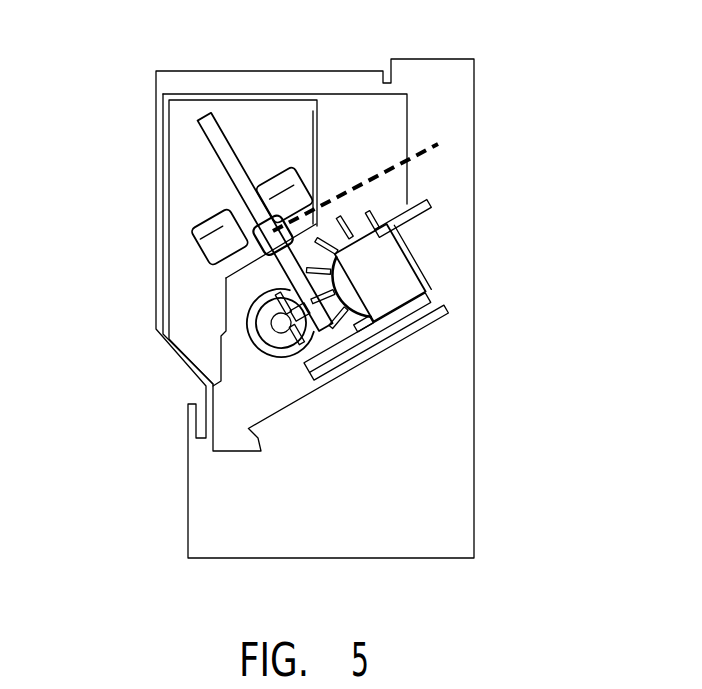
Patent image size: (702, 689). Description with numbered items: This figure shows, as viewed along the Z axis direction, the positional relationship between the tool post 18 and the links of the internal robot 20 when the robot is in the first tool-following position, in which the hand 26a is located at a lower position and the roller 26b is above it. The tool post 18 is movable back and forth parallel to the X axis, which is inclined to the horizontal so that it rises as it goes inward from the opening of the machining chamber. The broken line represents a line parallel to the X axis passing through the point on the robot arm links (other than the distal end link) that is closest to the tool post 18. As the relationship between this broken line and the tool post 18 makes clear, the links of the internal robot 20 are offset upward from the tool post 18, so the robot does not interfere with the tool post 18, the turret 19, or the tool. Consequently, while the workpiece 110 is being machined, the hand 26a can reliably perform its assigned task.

The internal robot 20 is at (268, 165).
The roller 26b is at (220, 147).
The hand 26a is at (232, 282).
The workpiece 110 is at (282, 335).
The tool post 18 is at (387, 261).
The turret 19 is at (408, 205).